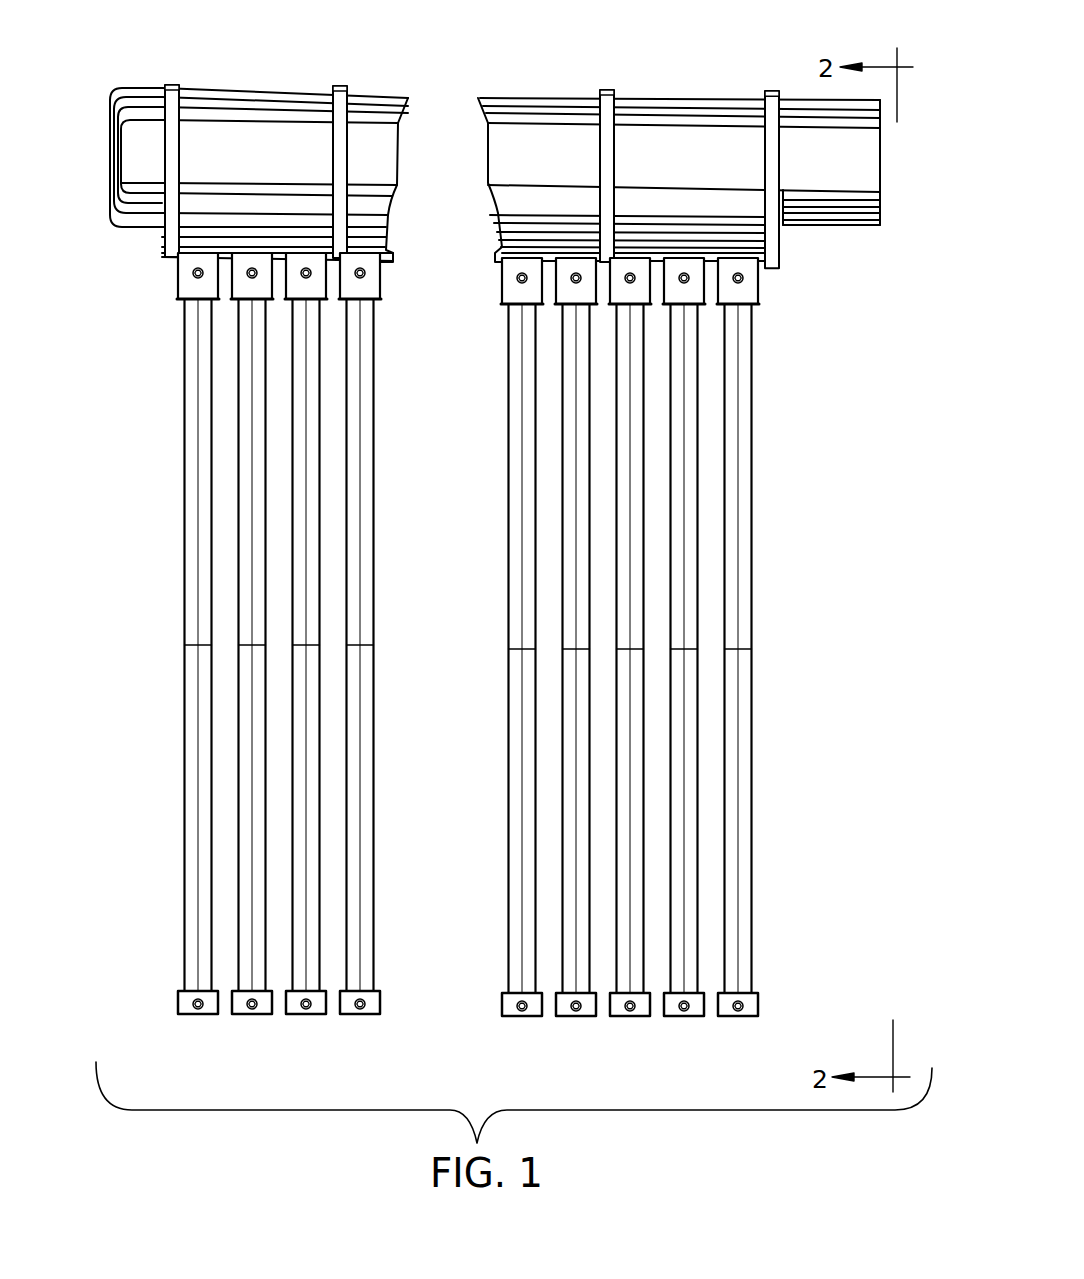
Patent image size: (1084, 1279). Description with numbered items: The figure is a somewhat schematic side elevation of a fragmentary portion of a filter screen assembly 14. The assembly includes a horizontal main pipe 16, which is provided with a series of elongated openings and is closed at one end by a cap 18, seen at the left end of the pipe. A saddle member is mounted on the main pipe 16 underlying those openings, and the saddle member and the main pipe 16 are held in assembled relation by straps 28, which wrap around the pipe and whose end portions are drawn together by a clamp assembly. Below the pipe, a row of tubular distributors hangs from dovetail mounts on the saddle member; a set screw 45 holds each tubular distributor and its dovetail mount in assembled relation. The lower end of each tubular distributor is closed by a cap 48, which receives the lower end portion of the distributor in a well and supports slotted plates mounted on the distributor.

The filter screen assembly 14 is at (780, 361).
The main pipe 16 is at (648, 143).
The cap 18 is at (136, 143).
The straps 28 is at (772, 163).
The set screw 45 is at (516, 280).
The cap 48 is at (503, 1002).